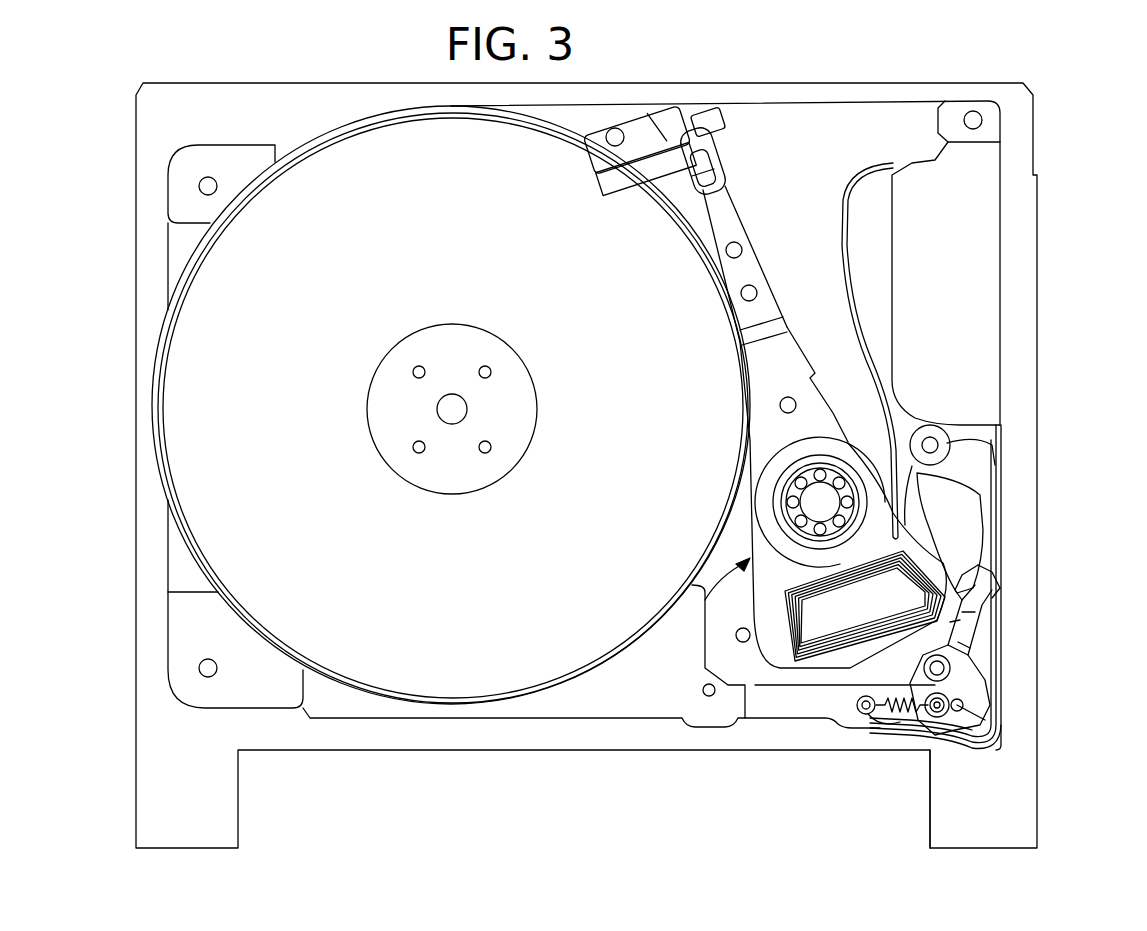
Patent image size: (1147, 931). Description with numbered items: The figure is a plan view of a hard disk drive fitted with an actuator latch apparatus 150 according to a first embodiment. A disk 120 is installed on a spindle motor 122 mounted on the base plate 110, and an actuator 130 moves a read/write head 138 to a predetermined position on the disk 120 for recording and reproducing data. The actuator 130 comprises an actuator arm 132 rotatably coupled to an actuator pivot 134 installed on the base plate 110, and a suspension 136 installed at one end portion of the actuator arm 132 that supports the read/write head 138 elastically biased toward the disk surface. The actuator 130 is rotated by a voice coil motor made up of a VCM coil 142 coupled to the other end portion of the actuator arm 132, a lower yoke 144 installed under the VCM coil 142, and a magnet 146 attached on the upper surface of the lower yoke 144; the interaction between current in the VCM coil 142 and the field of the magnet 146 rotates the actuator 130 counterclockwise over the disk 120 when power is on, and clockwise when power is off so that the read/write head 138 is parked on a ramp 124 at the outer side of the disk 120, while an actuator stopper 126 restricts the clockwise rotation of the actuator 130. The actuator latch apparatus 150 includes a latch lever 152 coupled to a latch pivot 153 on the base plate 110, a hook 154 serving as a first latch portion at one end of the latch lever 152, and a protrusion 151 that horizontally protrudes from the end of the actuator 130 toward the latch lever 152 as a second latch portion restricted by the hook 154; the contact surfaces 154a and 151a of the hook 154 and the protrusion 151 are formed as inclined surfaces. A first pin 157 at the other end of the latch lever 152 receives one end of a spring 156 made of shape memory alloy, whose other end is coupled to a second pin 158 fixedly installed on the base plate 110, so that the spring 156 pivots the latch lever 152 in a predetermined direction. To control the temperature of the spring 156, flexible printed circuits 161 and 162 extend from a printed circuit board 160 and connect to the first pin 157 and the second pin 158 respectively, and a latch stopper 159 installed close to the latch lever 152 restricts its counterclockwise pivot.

The base plate 110 is at (500, 735).
The disk 120 is at (393, 665).
The spindle motor 122 is at (395, 432).
The ramp 124 is at (650, 150).
The actuator stopper 126 is at (741, 642).
The actuator 130 is at (693, 590).
The actuator arm 132 is at (790, 355).
The actuator pivot 134 is at (826, 495).
The suspension 136 is at (748, 270).
The read/write head 138 is at (713, 180).
The VCM coil 142 is at (797, 656).
The lower yoke 144 is at (980, 468).
The magnet 146 is at (966, 513).
The actuator latch apparatus 150 is at (985, 706).
The protrusion 151 is at (975, 618).
The contact surface 151a is at (968, 650).
The latch lever 152 is at (960, 622).
The latch pivot 153 is at (978, 692).
The hook 154 is at (976, 598).
The contact surface 154a is at (988, 572).
The spring 156 is at (905, 712).
The first pin 157 is at (935, 716).
The second pin 158 is at (863, 712).
The latch stopper 159 is at (993, 740).
The printed circuit board 160 is at (965, 268).
The flexible printed circuit 161 is at (990, 753).
The flexible printed circuit 162 is at (968, 753).